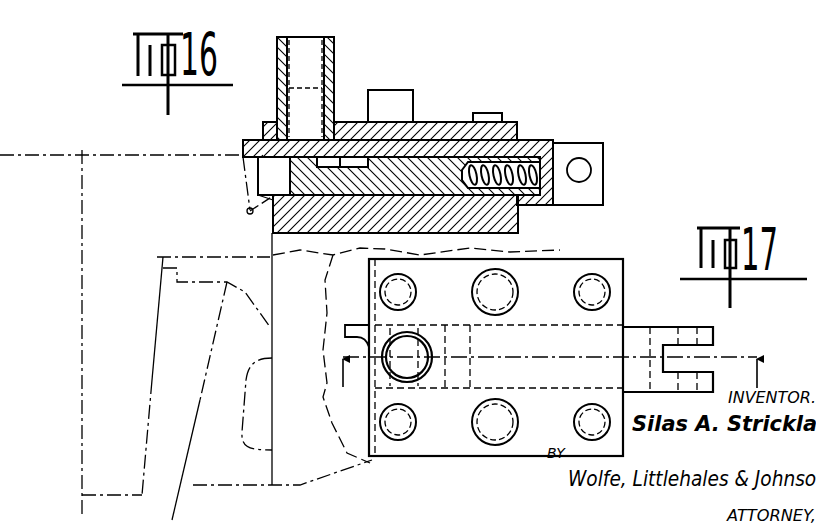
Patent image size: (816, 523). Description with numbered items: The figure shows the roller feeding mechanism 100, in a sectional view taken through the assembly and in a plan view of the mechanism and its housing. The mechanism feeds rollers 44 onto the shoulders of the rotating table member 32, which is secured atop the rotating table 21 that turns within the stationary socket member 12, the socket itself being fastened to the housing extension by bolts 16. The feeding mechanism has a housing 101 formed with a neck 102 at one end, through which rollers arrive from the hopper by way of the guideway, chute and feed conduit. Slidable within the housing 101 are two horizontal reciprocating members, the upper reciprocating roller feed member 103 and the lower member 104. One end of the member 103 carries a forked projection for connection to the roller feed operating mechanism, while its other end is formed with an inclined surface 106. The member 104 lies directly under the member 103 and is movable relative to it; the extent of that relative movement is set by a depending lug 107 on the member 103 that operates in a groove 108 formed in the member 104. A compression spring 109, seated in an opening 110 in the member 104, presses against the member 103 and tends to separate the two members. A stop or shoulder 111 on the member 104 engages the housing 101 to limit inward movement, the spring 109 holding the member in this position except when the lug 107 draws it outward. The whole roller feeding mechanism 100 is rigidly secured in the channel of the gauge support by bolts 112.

In FIG. 16, the stationary socket member 12 is at (212, 413).
In FIG. 17, the bolts 16 is at (560, 380).
In FIG. 16, the rotating table 21 is at (177, 320).
In FIG. 16, the rotating table member 32 is at (152, 168).
In FIG. 16, the rollers 44 is at (301, 52).
In FIG. 16, the roller feeding mechanism 100 is at (435, 122).
In FIG. 17, the roller feeding mechanism 100 is at (412, 455).
In FIG. 16, the housing 101 is at (458, 130).
In FIG. 17, the housing 101 is at (440, 440).
In FIG. 16, the neck 102 is at (337, 47).
In FIG. 16, the reciprocating roller feed member 103 is at (525, 150).
In FIG. 17, the reciprocating roller feed member 103 is at (638, 335).
In FIG. 16, the reciprocating member 104 is at (317, 180).
In FIG. 16, the inclined surface 106 is at (268, 140).
In FIG. 16, the depending lug 107 is at (332, 158).
In FIG. 16, the groove 108 is at (350, 165).
In FIG. 16, the compression spring 109 is at (545, 185).
In FIG. 16, the opening 110 is at (527, 200).
In FIG. 16, the stop or shoulder 111 is at (523, 210).
In FIG. 16, the bolts 112 is at (392, 108).
In FIG. 17, the bolts 112 is at (503, 298).